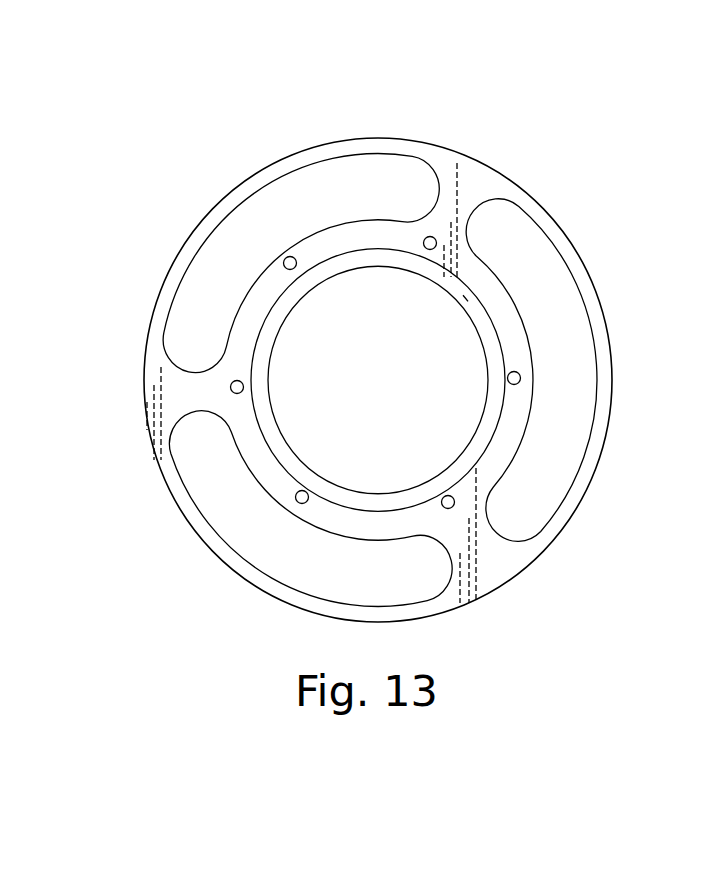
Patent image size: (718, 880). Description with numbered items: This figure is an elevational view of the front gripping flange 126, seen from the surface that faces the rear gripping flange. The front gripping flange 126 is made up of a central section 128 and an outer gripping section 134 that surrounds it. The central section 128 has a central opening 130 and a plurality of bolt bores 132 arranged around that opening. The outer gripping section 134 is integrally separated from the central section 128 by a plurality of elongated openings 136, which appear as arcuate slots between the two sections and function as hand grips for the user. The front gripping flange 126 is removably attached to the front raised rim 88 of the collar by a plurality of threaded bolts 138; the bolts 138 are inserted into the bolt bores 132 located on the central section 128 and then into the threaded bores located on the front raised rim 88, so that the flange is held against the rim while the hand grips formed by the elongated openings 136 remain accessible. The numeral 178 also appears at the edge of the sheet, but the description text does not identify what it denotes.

The mounting plate 126 is at (450, 130).
The central opening ring 128 is at (270, 284).
The central bore 130 is at (258, 343).
The bearing housing 88 is at (463, 295).
The arcuate slots 134 is at (248, 186).
The arcuate slot 136 is at (228, 500).
The mounting holes 132 is at (455, 497).
The fastener holes 138 is at (311, 383).
The pins 178 is at (685, 241).